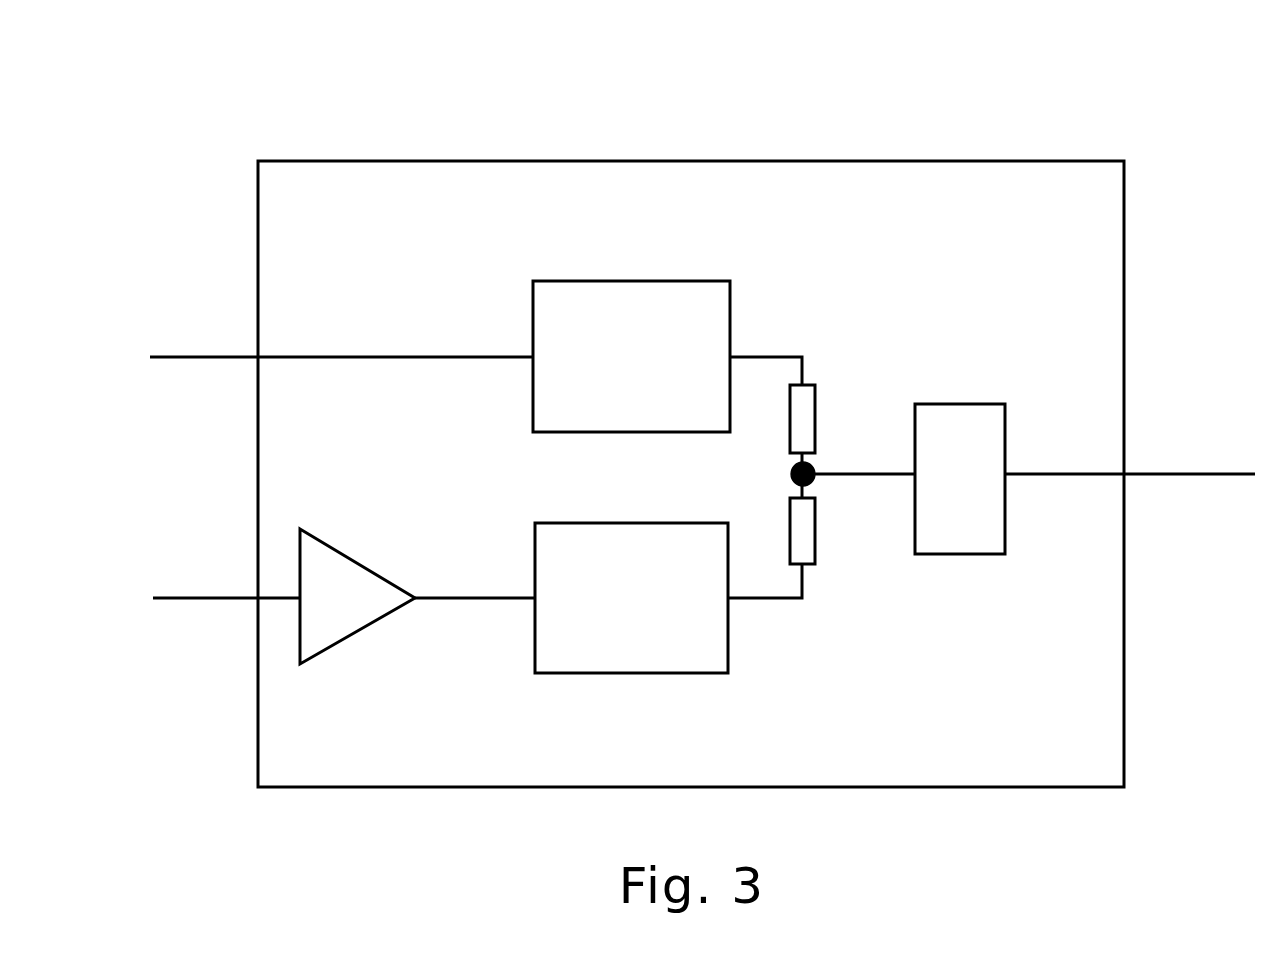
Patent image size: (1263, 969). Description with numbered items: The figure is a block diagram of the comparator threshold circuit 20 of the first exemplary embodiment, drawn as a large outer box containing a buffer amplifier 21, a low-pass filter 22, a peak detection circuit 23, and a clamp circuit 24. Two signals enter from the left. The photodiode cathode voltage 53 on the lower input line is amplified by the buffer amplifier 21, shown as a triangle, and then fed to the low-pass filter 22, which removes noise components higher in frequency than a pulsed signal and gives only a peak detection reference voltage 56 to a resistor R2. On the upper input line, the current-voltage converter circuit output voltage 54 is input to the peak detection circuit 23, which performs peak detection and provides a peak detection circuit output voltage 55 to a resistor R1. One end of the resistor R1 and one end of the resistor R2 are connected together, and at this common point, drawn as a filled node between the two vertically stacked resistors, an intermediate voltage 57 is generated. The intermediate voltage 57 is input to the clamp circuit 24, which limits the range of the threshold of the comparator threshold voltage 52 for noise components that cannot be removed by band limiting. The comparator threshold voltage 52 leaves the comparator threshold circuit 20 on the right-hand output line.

The comparator threshold circuit 20 is at (1064, 72).
The buffer amplifier 21 is at (357, 640).
The low-pass filter 22 is at (640, 678).
The peak detection circuit 23 is at (533, 328).
The clamp circuit 24 is at (969, 403).
The comparator threshold voltage 52 is at (1197, 479).
The photodiode cathode voltage 53 is at (204, 603).
The current-voltage converter circuit output voltage 54 is at (206, 362).
The peak detection circuit output voltage 55 is at (773, 354).
The peak detection reference voltage 56 is at (774, 603).
The intermediate voltage 57 is at (815, 477).
The resistor R1 is at (797, 410).
The resistor R2 is at (807, 541).